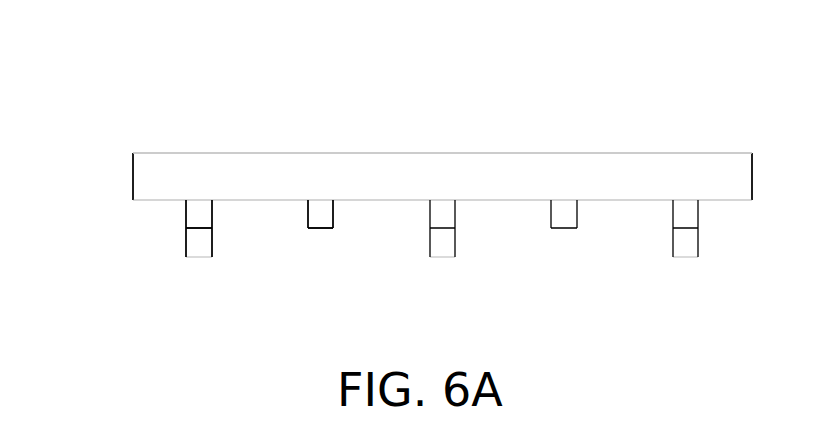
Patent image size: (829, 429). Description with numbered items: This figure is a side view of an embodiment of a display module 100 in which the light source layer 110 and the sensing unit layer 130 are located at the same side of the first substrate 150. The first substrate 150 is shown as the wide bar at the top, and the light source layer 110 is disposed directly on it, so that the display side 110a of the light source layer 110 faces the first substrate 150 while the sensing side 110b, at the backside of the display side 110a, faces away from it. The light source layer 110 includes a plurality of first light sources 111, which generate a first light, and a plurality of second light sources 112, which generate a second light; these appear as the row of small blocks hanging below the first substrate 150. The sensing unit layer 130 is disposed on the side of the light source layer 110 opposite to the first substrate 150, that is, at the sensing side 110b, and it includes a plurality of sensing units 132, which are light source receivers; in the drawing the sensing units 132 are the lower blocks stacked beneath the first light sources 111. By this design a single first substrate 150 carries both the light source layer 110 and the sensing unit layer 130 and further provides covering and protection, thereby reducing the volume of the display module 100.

The display module 100 is at (151, 68).
The first substrate 150 is at (208, 163).
The display side 110a is at (143, 115).
The sensing side 110b is at (143, 315).
The light source layer 110 is at (118, 201).
The sensing unit layer 130 is at (118, 233).
The first light source 111 is at (203, 212).
The second light source 112 is at (318, 212).
The sensing unit 132 is at (205, 243).